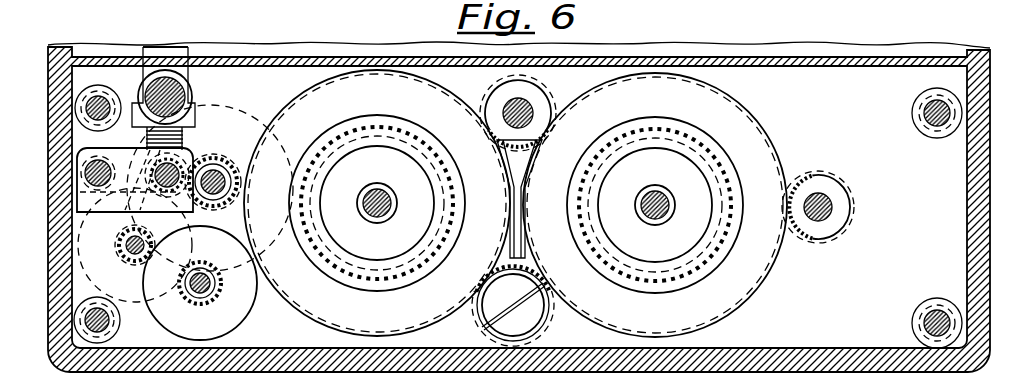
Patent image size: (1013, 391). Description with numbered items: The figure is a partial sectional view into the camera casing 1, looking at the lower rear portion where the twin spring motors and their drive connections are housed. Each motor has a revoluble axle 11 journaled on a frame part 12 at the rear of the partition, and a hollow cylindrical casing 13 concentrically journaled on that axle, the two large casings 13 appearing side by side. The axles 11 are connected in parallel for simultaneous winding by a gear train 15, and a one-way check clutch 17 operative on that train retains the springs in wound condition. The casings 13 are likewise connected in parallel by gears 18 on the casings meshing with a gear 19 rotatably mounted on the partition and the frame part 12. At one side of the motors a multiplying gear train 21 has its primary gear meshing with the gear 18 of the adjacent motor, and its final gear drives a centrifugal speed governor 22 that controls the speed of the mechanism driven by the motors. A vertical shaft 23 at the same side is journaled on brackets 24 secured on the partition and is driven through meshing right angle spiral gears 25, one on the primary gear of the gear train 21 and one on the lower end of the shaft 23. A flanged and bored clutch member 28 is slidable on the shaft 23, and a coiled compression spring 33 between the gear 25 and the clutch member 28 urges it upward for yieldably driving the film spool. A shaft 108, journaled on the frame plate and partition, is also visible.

The camera casing 1 is at (58, 97).
The frame part 12 is at (802, 76).
The hollow cylindrical casing 13 is at (305, 107).
The revoluble axle 11 is at (375, 222).
The gear train 15 is at (537, 269).
The one-way check clutch 17 is at (482, 320).
The gears 18 is at (486, 128).
The gear 19 is at (553, 108).
The multiplying gear train 21 is at (253, 112).
The centrifugal speed governor 22 is at (253, 312).
The vertical shaft 23 is at (197, 127).
The brackets 24 is at (80, 165).
The right angle spiral gears 25 is at (80, 193).
The clutch member 28 is at (143, 72).
The coiled compression spring 33 is at (187, 140).
The shaft 108 is at (189, 98).